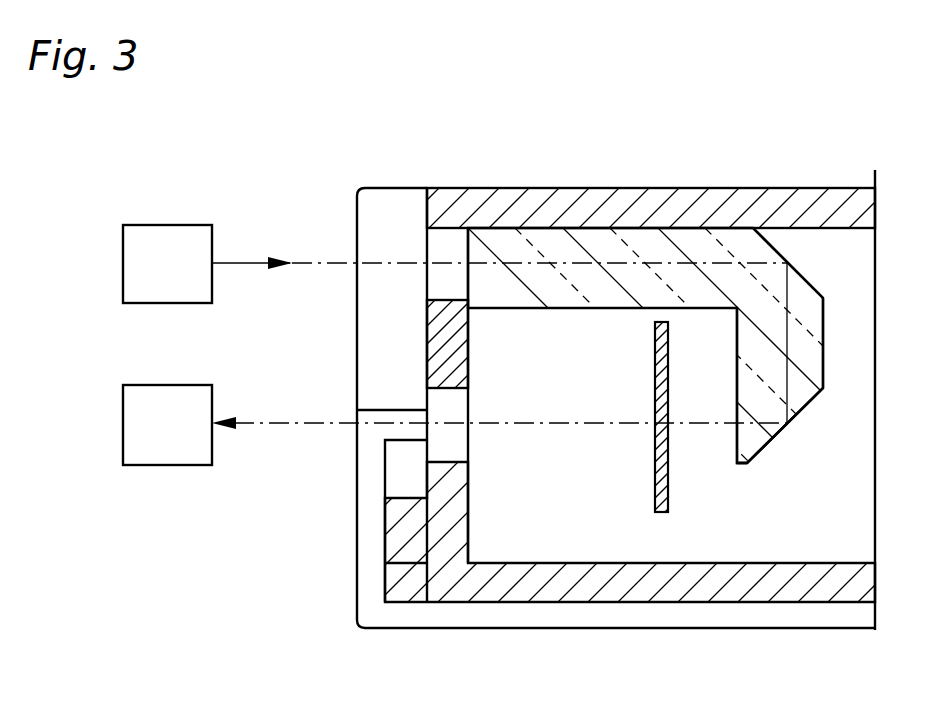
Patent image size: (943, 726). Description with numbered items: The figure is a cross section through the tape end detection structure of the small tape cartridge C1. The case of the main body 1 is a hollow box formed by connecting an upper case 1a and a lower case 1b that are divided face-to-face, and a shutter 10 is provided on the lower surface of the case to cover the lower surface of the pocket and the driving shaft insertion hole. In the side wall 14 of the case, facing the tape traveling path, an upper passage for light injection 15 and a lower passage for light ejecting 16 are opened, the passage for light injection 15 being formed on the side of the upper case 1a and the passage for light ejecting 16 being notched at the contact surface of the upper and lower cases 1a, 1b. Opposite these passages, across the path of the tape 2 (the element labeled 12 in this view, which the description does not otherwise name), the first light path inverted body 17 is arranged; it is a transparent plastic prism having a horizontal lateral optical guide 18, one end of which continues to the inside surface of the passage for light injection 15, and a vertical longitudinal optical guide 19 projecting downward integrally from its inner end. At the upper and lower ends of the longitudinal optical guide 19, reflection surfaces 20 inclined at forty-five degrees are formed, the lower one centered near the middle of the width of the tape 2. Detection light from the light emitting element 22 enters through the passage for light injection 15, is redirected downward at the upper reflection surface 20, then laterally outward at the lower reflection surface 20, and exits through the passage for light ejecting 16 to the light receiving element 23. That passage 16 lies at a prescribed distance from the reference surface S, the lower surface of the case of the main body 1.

The small tape cartridge C1 is at (528, 168).
The case of the main body 1 is at (600, 395).
The upper case 1a is at (805, 197).
The lower case 1b is at (775, 592).
The shutter 10 is at (720, 615).
The side wall 14 is at (435, 344).
The passage for light injection 15 is at (435, 245).
The passage for light ejecting 16 is at (435, 450).
The first light path inverted body 17 is at (777, 470).
The lateral optical guide 18 is at (573, 297).
The longitudinal optical guide 19 is at (745, 338).
The reflection surface 20 is at (803, 266).
The tape 2 is at (664, 421).
The sensing element 12 is at (655, 455).
The light emitting element 22 is at (157, 235).
The light receiving element 23 is at (167, 453).
The reference surface S is at (485, 602).